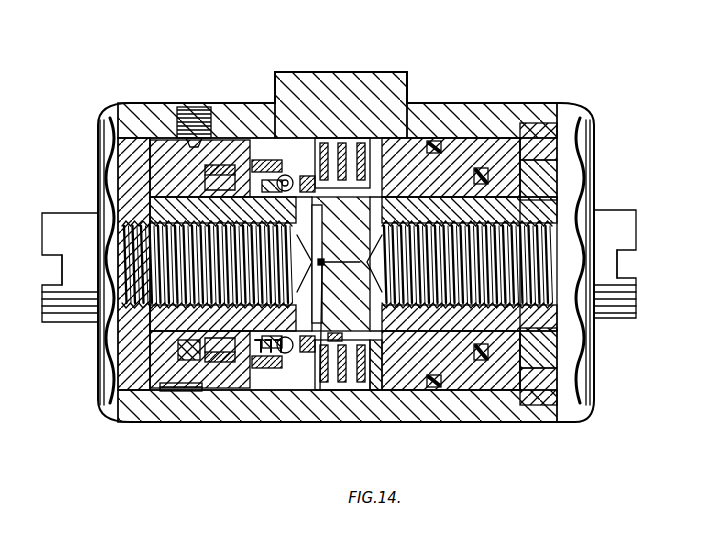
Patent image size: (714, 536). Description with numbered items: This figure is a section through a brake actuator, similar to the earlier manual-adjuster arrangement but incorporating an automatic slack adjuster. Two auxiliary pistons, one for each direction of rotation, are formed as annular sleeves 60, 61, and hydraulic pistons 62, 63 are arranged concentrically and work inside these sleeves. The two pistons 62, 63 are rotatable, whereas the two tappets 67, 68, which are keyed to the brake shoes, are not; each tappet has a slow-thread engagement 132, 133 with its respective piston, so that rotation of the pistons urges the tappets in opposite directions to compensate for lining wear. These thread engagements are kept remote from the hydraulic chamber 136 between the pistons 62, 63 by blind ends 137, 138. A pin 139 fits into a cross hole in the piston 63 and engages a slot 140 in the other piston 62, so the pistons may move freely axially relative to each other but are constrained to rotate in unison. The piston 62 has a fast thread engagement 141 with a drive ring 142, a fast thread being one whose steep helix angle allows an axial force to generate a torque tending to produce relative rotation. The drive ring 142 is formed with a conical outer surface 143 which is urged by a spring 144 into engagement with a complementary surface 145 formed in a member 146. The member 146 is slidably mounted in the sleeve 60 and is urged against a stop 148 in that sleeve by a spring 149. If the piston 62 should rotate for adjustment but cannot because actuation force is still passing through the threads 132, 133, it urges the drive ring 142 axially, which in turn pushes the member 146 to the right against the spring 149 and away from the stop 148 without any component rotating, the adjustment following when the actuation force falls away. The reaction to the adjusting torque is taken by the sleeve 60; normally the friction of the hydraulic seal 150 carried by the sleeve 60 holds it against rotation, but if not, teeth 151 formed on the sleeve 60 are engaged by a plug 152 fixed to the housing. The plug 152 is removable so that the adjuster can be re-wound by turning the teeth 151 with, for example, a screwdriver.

The sleeve 60 is at (147, 157).
The sleeve 61 is at (500, 157).
The piston 62 is at (148, 212).
The piston 63 is at (584, 167).
The tappet 67 is at (80, 303).
The tappet 68 is at (612, 297).
The slow-thread engagement 132 is at (153, 210).
The slow-thread engagement 133 is at (500, 207).
The hydraulic chamber 136 is at (347, 393).
The blind end 137 is at (307, 393).
The blind end 138 is at (347, 268).
The pin 139 is at (320, 392).
The slot 140 is at (413, 356).
The fast thread engagement 141 is at (183, 388).
The drive ring 142 is at (265, 390).
The conical outer surface 143 is at (300, 182).
The spring 144 is at (222, 185).
The complementary surface 145 is at (318, 182).
The member 146 is at (275, 178).
The stop 148 is at (258, 175).
The spring 149 is at (328, 393).
The hydraulic seal 150 is at (252, 387).
The teeth 151 is at (170, 392).
The plug 152 is at (200, 120).